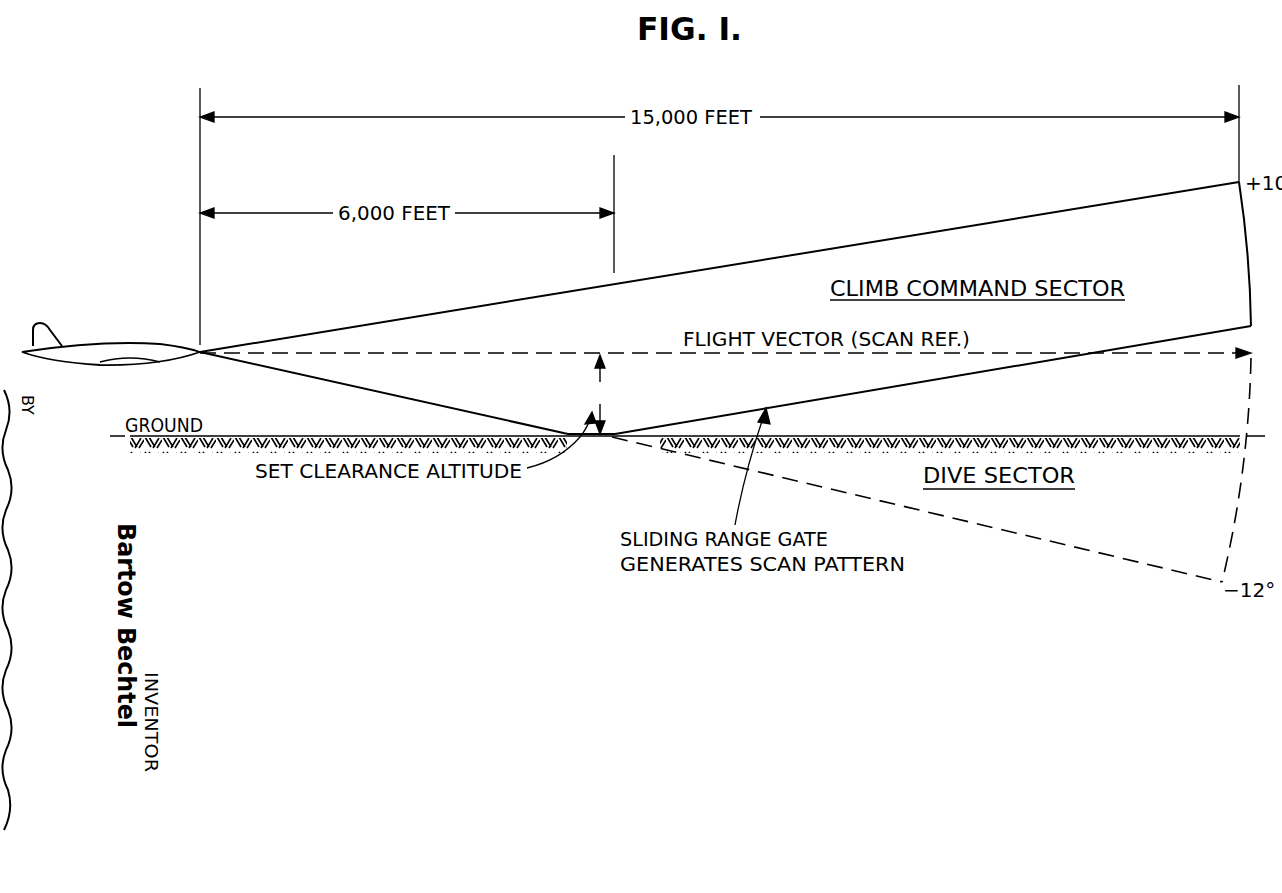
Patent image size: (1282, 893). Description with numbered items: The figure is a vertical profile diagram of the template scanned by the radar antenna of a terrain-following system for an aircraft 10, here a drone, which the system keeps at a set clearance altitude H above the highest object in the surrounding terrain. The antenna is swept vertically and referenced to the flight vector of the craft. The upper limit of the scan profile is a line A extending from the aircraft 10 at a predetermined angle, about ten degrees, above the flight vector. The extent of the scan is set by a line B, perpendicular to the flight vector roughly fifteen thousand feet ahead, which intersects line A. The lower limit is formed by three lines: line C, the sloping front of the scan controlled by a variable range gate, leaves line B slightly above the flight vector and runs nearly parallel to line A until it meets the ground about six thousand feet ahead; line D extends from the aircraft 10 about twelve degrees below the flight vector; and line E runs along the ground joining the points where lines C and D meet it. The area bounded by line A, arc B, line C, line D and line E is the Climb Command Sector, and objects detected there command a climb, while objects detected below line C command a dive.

The aircraft 10 is at (130, 346).
The line A is at (806, 250).
The line B is at (1249, 278).
The line C is at (931, 384).
The line D is at (308, 378).
The line E is at (605, 441).
The altitude H is at (601, 394).